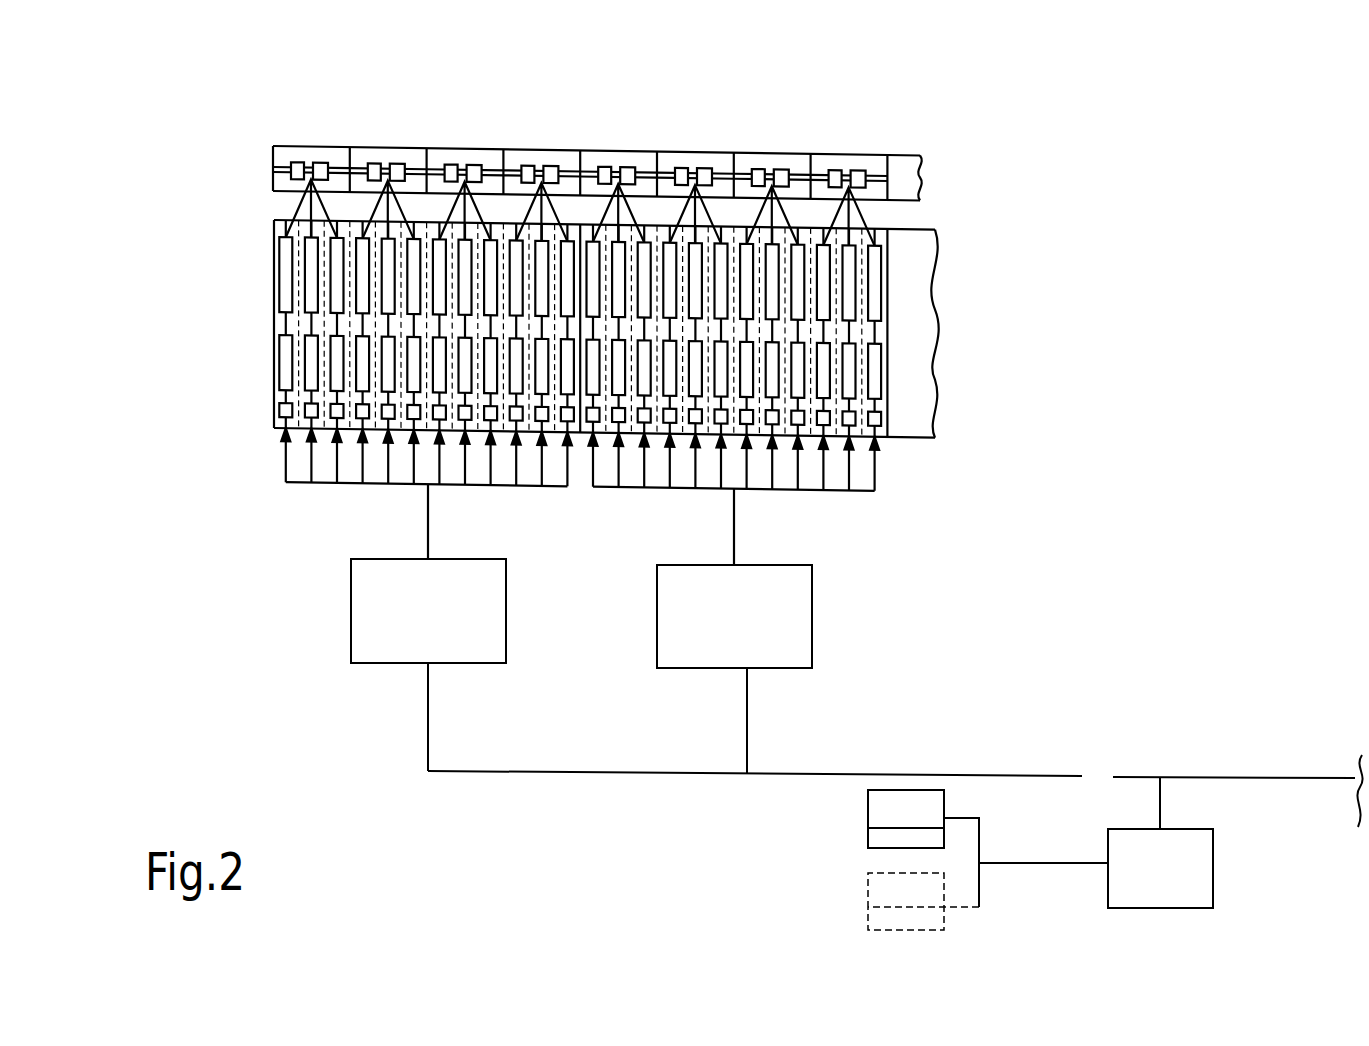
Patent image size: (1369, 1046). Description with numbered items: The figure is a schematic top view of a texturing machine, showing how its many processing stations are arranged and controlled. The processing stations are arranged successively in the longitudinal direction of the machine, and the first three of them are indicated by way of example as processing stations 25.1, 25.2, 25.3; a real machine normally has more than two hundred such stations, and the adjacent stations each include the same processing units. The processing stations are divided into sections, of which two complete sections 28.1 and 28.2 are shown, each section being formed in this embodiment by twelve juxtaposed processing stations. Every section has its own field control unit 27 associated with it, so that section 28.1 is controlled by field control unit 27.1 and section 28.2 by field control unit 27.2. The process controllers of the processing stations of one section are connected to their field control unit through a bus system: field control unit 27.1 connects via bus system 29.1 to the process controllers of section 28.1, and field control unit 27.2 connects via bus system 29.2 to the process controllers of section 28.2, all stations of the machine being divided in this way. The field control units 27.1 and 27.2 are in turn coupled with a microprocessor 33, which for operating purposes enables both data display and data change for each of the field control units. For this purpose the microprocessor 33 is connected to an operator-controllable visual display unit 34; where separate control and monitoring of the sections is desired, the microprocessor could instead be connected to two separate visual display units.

The processing station 25.1 is at (287, 325).
The processing station 25.2 is at (337, 320).
The processing station 25.3 is at (282, 410).
The field control unit 27 is at (655, 662).
The field control unit 27.1 is at (360, 623).
The field control unit 27.2 is at (800, 630).
The section 28.1 is at (578, 137).
The section 28.2 is at (887, 137).
The bus system 29.1 is at (428, 508).
The bus system 29.2 is at (734, 506).
The microprocessor 33 is at (1196, 865).
The visual display unit 34 is at (880, 809).